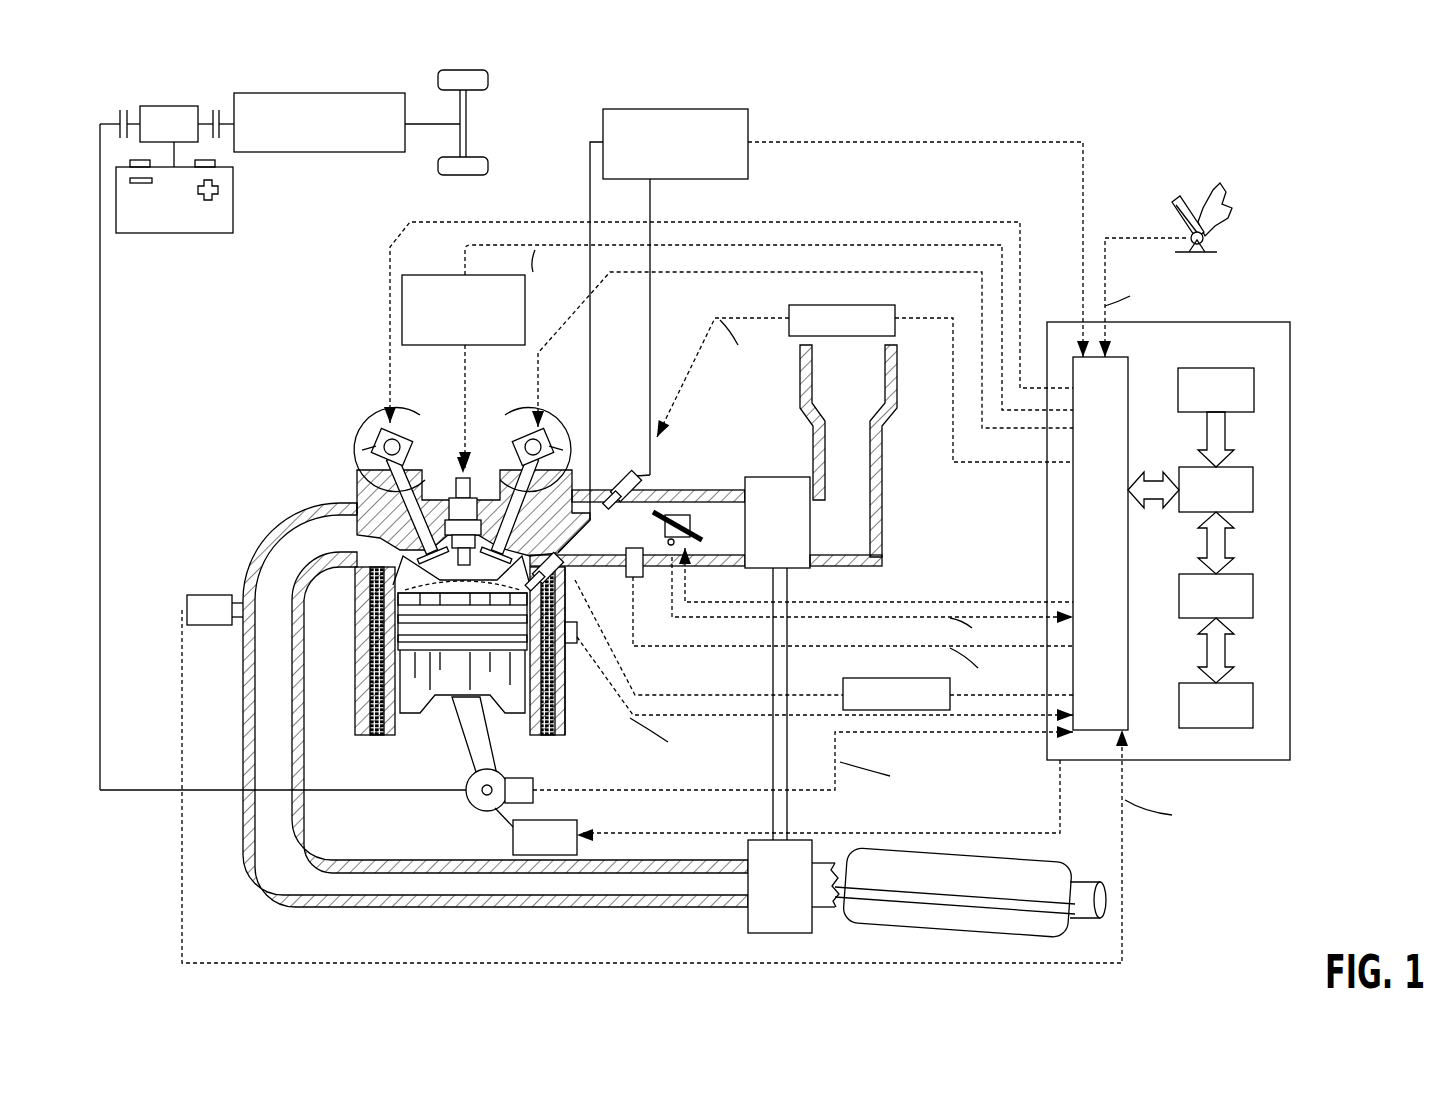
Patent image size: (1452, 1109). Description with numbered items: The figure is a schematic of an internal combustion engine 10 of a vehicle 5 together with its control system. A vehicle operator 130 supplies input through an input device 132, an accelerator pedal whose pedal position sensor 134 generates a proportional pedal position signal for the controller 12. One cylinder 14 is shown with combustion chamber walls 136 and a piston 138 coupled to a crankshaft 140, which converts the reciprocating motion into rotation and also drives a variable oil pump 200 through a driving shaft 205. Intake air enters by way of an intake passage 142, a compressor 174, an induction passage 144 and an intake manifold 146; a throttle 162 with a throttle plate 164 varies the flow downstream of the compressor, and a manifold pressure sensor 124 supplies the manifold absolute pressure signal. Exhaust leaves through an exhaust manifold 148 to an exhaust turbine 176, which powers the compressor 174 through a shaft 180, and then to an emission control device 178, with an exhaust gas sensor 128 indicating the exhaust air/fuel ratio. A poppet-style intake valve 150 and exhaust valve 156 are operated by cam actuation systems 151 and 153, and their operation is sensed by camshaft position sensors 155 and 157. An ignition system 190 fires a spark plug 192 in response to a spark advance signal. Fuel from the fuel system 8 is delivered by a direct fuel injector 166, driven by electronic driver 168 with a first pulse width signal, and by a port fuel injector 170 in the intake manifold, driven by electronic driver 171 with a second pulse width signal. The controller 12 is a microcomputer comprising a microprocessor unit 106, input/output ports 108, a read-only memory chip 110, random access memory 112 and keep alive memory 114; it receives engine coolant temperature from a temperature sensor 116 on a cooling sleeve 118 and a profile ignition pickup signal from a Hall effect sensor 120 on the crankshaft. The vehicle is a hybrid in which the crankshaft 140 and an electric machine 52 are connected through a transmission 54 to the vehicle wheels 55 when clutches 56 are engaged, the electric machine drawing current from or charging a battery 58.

The vehicle 5 is at (1350, 137).
The fuel system 8 is at (720, 108).
The internal combustion engine 10 is at (276, 414).
The controller 12 is at (1290, 322).
The cylinder 14 is at (358, 600).
The electric machine 52 is at (166, 106).
The transmission 54 is at (380, 153).
The vehicle wheels 55 is at (468, 178).
The clutch 56 is at (112, 110).
The battery 58 is at (165, 233).
The microprocessor unit 106 is at (1253, 486).
The input/output ports 108 is at (1130, 366).
The read-only memory chip 110 is at (1254, 388).
The random access memory 112 is at (1253, 596).
The keep alive memory 114 is at (1253, 706).
The temperature sensor 116 is at (571, 643).
The cooling sleeve 118 is at (566, 725).
The Hall effect sensor 120 is at (535, 800).
The manifold pressure sensor 124 is at (634, 580).
The exhaust gas sensor 128 is at (187, 600).
The vehicle operator 130 is at (1232, 203).
The input device 132 is at (1172, 212).
The pedal position sensor 134 is at (1205, 238).
The combustion chamber walls 136 is at (403, 725).
The piston 138 is at (445, 682).
The crankshaft 140 is at (470, 808).
The intake passage 142 is at (848, 455).
The induction passage 144 is at (724, 515).
The intake manifold 146 is at (551, 513).
The exhaust manifold 148 is at (490, 705).
The intake valve 150 is at (479, 502).
The cam actuation system 151 is at (527, 432).
The cam actuation system 153 is at (398, 430).
The camshaft position sensor 155 is at (570, 440).
The exhaust valve 156 is at (385, 510).
The camshaft position sensor 157 is at (356, 435).
The throttle 162 is at (690, 515).
The throttle plate 164 is at (654, 510).
The fuel injector 166 is at (548, 560).
The electronic driver 168 is at (845, 680).
The fuel injector 170 is at (622, 472).
The electronic driver 171 is at (788, 305).
The compressor 174 is at (777, 522).
The exhaust turbine 176 is at (793, 886).
The emission control device 178 is at (1030, 863).
The shaft 180 is at (790, 800).
The ignition system 190 is at (418, 272).
The spark plug 192 is at (456, 492).
The variable oil pump 200 is at (786, 807).
The driving shaft 205 is at (505, 830).